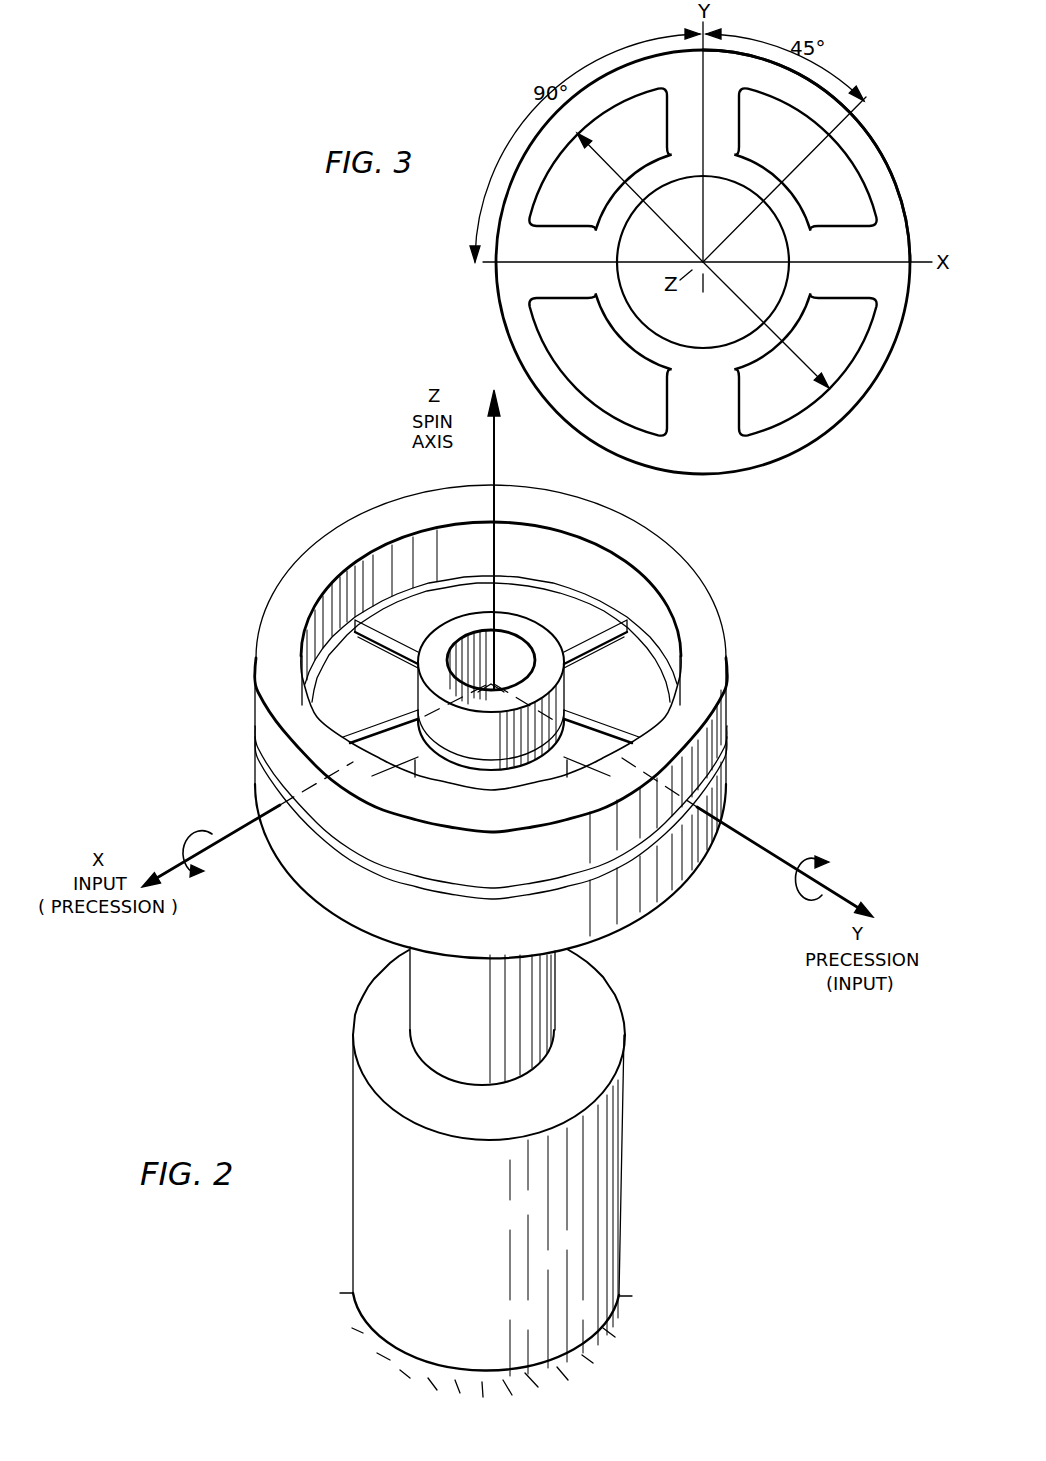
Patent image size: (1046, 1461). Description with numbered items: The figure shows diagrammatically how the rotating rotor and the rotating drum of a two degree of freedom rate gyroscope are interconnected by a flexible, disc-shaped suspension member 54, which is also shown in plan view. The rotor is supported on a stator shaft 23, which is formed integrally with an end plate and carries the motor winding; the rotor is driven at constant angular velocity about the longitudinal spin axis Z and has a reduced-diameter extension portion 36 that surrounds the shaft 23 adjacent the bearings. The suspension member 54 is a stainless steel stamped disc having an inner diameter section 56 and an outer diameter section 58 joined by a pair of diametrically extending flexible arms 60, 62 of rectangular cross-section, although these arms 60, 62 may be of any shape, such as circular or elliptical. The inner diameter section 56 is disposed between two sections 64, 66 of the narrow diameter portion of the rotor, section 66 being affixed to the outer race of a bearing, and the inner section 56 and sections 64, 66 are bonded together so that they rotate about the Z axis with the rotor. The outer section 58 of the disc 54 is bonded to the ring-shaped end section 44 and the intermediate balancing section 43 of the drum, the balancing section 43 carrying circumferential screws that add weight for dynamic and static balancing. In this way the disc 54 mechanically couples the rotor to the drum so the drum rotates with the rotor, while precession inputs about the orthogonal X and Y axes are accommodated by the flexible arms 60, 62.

In FIG. 2, the shaft 23 is at (612, 1142).
In FIG. 2, the extension portion 36 is at (540, 1010).
In FIG. 2, the intermediate balancing section 43 is at (330, 817).
In FIG. 2, the ring-shaped end section 44 is at (340, 895).
In FIG. 3, the flexible disc-shaped suspension member 54 is at (485, 329).
In FIG. 2, the flexible disc-shaped suspension member 54 is at (713, 786).
In FIG. 3, the inner diameter section 56 is at (750, 356).
In FIG. 2, the inner diameter section 56 is at (440, 762).
In FIG. 3, the outer diameter section 58 is at (797, 450).
In FIG. 2, the outer diameter section 58 is at (620, 862).
In FIG. 3, the flexible arm 60 is at (833, 230).
In FIG. 2, the flexible arm 60 is at (577, 636).
In FIG. 3, the flexible arm 62 is at (740, 128).
In FIG. 2, the flexible arm 62 is at (410, 643).
In FIG. 3, the section of the narrow diameter portion of the rotor 64 is at (703, 262).
In FIG. 2, the section of the narrow diameter portion of the rotor 64 is at (535, 770).
In FIG. 2, the section of the narrow diameter portion of the rotor 66 is at (483, 756).